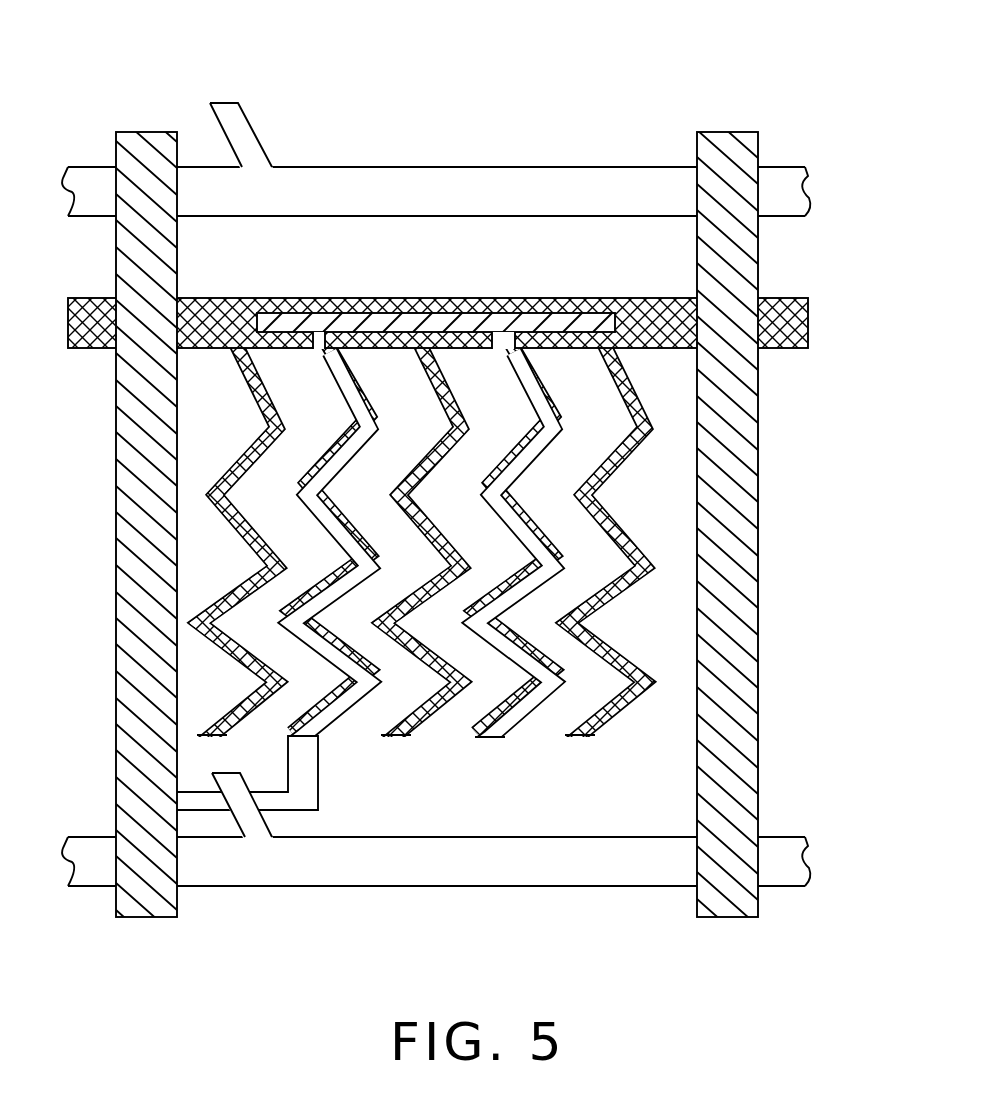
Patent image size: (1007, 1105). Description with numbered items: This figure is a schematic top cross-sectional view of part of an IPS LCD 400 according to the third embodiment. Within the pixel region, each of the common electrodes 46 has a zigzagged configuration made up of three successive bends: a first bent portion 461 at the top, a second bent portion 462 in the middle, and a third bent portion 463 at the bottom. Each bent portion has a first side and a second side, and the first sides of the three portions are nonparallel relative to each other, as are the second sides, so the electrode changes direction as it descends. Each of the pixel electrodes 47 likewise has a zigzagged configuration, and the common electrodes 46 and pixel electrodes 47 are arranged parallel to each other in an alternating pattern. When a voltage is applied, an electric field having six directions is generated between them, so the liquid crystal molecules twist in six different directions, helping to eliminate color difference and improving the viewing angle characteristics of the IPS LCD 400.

The IPS LCD 400 is at (445, 108).
The common electrode 46 is at (556, 537).
The first bent portion 461 is at (440, 437).
The second bent portion 462 is at (430, 590).
The third bent portion 463 is at (453, 690).
The pixel electrode 47 is at (327, 476).